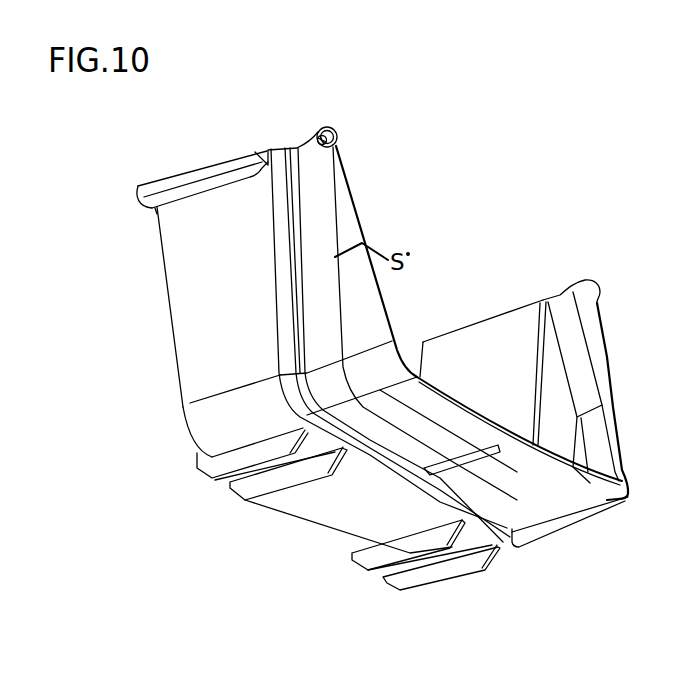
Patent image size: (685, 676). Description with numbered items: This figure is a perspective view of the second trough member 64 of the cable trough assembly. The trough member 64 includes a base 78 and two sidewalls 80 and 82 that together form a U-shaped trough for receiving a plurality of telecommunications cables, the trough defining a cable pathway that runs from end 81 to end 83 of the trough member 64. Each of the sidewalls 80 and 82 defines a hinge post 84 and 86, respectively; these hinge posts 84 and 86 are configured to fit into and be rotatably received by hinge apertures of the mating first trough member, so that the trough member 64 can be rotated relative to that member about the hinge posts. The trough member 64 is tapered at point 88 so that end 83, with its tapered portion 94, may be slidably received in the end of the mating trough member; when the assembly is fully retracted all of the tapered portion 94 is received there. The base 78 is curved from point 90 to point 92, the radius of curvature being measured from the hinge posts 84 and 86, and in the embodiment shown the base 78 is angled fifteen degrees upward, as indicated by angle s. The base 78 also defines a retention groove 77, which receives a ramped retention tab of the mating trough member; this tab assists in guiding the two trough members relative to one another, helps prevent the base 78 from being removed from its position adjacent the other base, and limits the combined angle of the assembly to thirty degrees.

The trough member 64 is at (375, 108).
The retention groove 77 is at (460, 463).
The base 78 is at (320, 510).
The sidewall 80 is at (200, 247).
The end 81 is at (175, 346).
The sidewall 82 is at (495, 348).
The end 83 is at (608, 387).
The hinge post 84 is at (323, 130).
The hinge post 86 is at (598, 300).
The point 88 is at (281, 170).
The point 90 is at (518, 498).
The point 92 is at (563, 467).
The tapered portion 94 is at (303, 325).